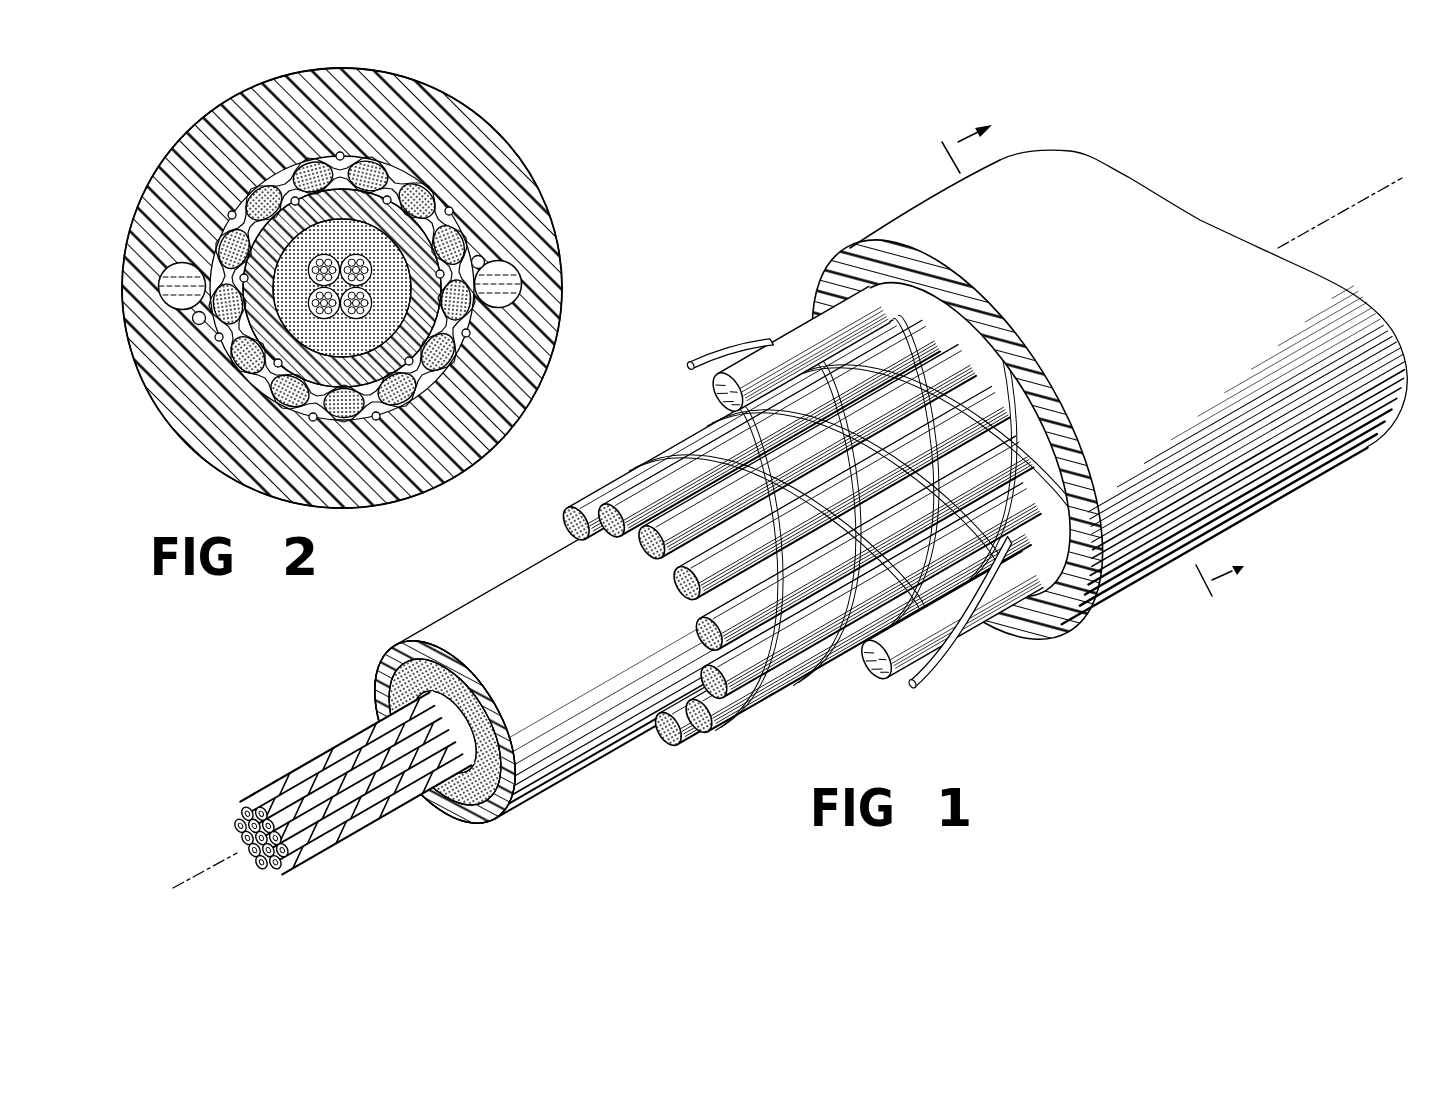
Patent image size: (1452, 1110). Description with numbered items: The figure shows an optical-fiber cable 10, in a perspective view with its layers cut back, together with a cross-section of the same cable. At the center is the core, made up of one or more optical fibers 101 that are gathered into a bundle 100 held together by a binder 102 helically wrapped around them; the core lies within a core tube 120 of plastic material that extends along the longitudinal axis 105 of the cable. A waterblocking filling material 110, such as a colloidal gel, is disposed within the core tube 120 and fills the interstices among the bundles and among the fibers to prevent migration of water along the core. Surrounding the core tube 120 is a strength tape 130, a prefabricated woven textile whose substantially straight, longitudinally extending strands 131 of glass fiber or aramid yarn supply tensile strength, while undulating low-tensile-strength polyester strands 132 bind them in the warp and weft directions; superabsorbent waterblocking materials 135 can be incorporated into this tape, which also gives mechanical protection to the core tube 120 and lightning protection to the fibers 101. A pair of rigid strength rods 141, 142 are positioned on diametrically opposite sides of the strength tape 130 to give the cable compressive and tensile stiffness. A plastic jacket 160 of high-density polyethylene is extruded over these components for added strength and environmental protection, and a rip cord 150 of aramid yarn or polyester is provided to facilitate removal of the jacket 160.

In FIG. 1, the optical-fiber cable 10 is at (816, 212).
In FIG. 2, the optical-fiber cable 10 is at (172, 104).
In FIG. 1, the bundle 100 is at (322, 787).
In FIG. 2, the bundle 100 is at (347, 340).
In FIG. 1, the optical fibers 101 is at (261, 838).
In FIG. 1, the binder 102 is at (356, 783).
In FIG. 1, the longitudinal axis 105 is at (200, 867).
In FIG. 1, the filling material 110 is at (447, 807).
In FIG. 2, the filling material 110 is at (387, 373).
In FIG. 1, the core tube 120 is at (478, 603).
In FIG. 2, the core tube 120 is at (300, 373).
In FIG. 1, the strength tape 130 is at (804, 530).
In FIG. 2, the strength tape 130 is at (342, 263).
In FIG. 1, the strands 131 is at (856, 625).
In FIG. 2, the strands 131 is at (366, 161).
In FIG. 1, the polyester strands 132 is at (773, 680).
In FIG. 2, the polyester strands 132 is at (404, 180).
In FIG. 2, the superabsorbent waterblocking materials 135 is at (270, 193).
In FIG. 1, the strength rod 141 is at (787, 330).
In FIG. 2, the strength rod 141 is at (182, 271).
In FIG. 1, the strength rod 142 is at (1000, 633).
In FIG. 2, the strength rod 142 is at (498, 310).
In FIG. 1, the rip cord 150 is at (725, 346).
In FIG. 2, the rip cord 150 is at (476, 254).
In FIG. 1, the plastic jacket 160 is at (915, 217).
In FIG. 2, the plastic jacket 160 is at (452, 102).